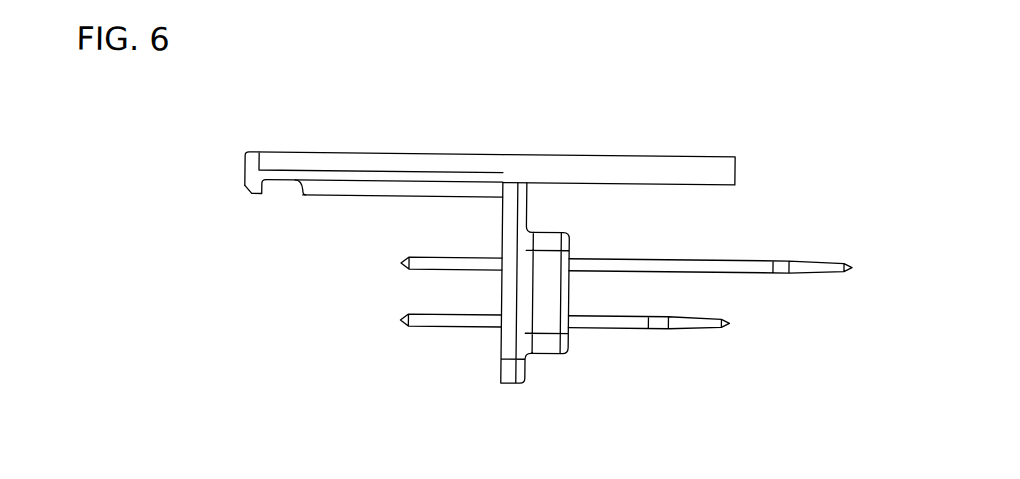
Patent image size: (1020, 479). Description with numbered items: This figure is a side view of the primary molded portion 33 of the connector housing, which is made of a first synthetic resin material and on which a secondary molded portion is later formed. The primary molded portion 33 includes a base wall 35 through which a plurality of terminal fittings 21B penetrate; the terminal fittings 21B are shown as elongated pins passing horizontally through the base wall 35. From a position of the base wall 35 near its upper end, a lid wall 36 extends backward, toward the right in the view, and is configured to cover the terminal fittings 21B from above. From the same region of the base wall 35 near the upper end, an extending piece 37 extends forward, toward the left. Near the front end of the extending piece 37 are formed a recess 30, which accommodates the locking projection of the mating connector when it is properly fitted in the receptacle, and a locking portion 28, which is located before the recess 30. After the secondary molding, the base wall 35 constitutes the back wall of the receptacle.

The terminal fittings 21B is at (713, 319).
The locking portion 28 is at (253, 195).
The recess 30 is at (287, 184).
The primary molded portion 33 is at (522, 147).
The base wall 35 is at (510, 338).
The lid wall 36 is at (686, 165).
The extending piece 37 is at (387, 165).